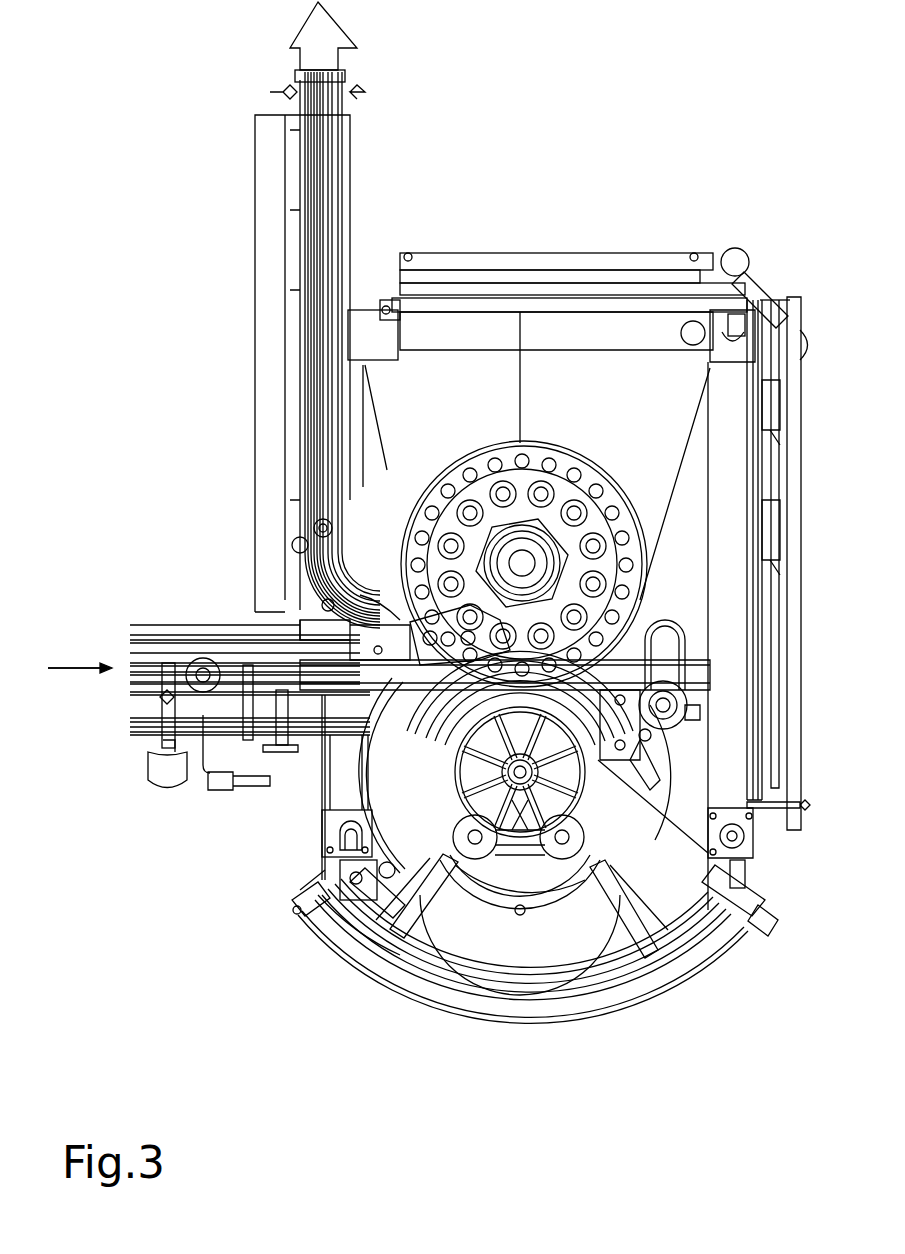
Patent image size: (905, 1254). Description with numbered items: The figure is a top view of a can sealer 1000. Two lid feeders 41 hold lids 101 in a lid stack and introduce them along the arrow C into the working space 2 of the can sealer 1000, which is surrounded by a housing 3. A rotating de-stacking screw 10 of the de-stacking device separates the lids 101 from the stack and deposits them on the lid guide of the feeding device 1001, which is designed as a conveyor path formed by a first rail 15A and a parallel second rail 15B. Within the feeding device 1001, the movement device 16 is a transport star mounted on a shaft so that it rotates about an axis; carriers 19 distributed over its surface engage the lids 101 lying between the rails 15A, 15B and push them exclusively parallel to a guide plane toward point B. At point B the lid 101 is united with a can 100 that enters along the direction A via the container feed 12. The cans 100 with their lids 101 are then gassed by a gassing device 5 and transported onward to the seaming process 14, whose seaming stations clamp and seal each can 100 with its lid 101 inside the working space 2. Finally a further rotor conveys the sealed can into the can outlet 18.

The can sealer 1000 is at (172, 168).
The can outlet 18 is at (320, 180).
The working space 2 is at (665, 495).
The housing 3 is at (750, 417).
The seaming process/station 14 is at (625, 572).
The gassing device 5 is at (322, 617).
The can 100 is at (200, 660).
The container feed 12 is at (160, 682).
The can entry direction A is at (78, 690).
The feeding device 1001 is at (350, 775).
The de-stacking screw 10 is at (300, 906).
The lid feeder 41 is at (365, 928).
The lid introduction direction C is at (410, 930).
The lid 101 is at (585, 900).
The first rail 15A is at (470, 848).
The second rail 15B is at (510, 860).
The movement device 16 is at (640, 770).
The carrier 19 is at (690, 733).
The uniting point B is at (660, 668).